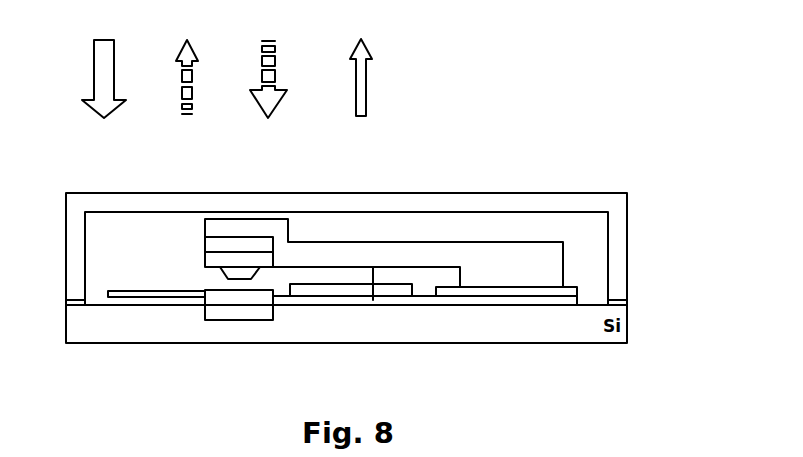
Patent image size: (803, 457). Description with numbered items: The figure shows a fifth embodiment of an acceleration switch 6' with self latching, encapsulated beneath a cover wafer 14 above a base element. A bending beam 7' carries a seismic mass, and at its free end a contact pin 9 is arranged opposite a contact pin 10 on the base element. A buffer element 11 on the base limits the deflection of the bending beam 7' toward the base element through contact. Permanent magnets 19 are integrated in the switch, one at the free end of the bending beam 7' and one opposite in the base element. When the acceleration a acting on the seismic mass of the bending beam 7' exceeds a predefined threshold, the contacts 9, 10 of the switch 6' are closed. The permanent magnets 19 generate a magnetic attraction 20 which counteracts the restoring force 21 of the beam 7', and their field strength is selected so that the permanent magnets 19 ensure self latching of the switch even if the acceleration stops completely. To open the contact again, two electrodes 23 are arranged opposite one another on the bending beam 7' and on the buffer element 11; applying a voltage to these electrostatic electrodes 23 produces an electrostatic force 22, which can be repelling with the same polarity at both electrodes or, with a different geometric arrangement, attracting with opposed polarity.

The acceleration a is at (104, 67).
The restoring force 21 is at (187, 65).
The magnetic attraction 20 is at (268, 67).
The electrostatic force 22 is at (361, 66).
The cover wafer 14 is at (543, 200).
The bending beam 7' is at (384, 216).
The permanent magnets 19 is at (260, 246).
The contact pin 10 is at (230, 289).
The contact pin 9 is at (222, 268).
The buffer element 11 is at (313, 291).
The electrodes 23 is at (333, 283).
The acceleration switch 6' is at (94, 401).